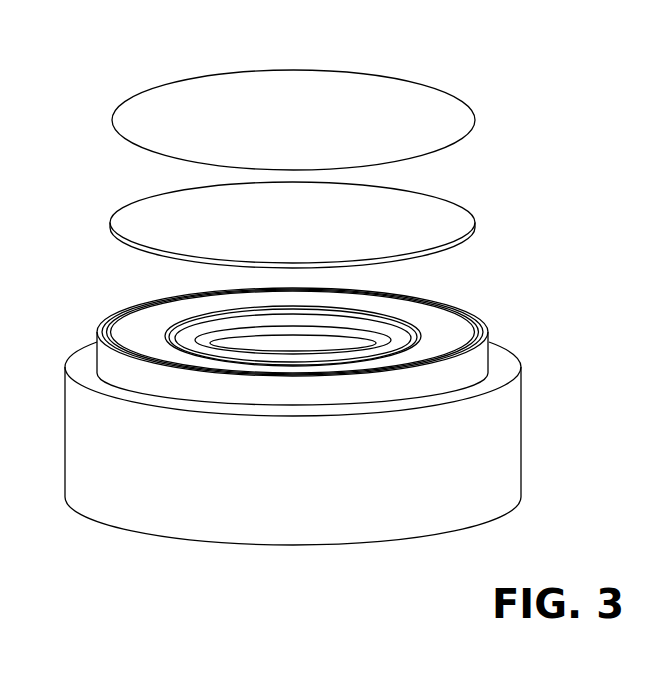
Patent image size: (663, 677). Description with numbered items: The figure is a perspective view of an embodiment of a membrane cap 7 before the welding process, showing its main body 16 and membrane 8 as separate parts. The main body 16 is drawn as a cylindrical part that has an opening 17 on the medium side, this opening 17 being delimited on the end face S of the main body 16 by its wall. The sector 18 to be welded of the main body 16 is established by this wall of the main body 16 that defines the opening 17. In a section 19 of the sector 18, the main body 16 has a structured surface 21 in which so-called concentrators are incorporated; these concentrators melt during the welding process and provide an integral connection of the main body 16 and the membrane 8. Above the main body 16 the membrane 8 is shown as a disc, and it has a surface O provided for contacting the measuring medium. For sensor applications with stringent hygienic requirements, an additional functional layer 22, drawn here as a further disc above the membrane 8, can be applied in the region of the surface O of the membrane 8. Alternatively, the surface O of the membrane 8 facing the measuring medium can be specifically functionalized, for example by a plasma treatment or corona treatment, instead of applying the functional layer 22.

The membrane cap 7 is at (105, 72).
The functional layer 22 is at (308, 128).
The membrane 8 is at (301, 230).
The surface of the membrane O is at (225, 206).
The end face S is at (478, 308).
The section of the sector 19 is at (120, 308).
The structured surface 21 is at (110, 322).
The opening 17 is at (320, 345).
The sector to be welded 18 is at (520, 330).
The main body 16 is at (500, 450).